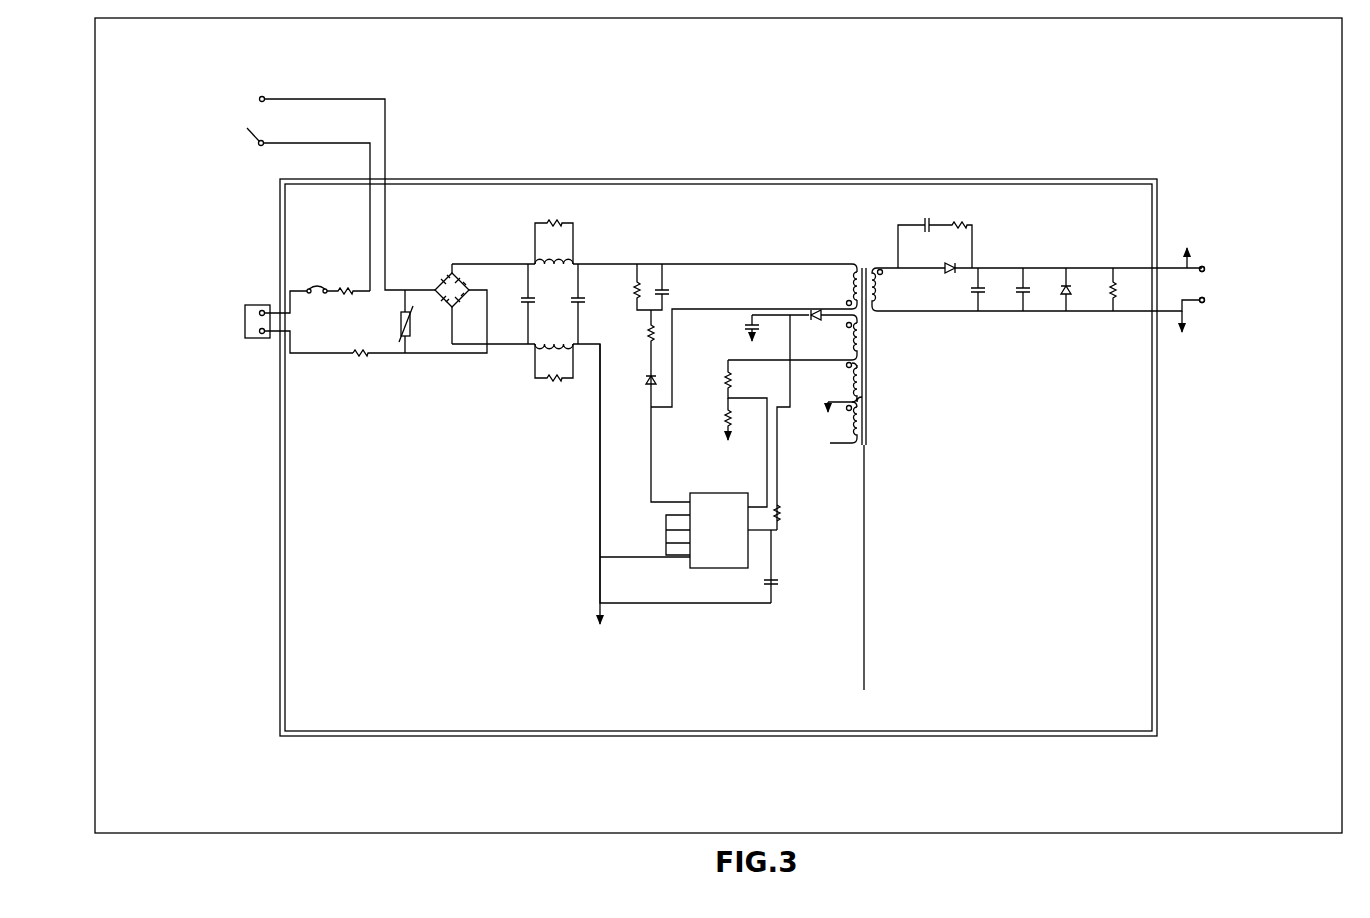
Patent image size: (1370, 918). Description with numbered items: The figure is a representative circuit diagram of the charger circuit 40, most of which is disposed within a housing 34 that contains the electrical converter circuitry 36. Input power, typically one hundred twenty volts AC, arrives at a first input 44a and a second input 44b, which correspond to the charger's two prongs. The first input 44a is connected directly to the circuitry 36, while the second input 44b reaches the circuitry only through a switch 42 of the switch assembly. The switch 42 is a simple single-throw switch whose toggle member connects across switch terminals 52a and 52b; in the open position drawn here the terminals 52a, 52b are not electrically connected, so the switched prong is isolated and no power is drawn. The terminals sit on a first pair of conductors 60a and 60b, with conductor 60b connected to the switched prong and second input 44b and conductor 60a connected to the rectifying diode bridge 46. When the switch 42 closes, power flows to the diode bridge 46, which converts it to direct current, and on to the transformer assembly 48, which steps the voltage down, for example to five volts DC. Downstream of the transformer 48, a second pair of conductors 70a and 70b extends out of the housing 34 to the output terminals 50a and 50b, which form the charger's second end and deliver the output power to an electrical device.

The circuit 40 is at (725, 110).
The housing 34 is at (665, 178).
The transformer assembly 48 is at (858, 222).
The rectifying diode bridge 46 is at (415, 252).
The electrical converter circuitry 36 is at (425, 450).
The switch 42 is at (172, 152).
The switch terminal 52a is at (257, 102).
The switch terminal 52b is at (257, 146).
The conductor 60a is at (385, 137).
The conductor 60b is at (370, 160).
The first input 44a is at (262, 345).
The second input 44b is at (273, 292).
The conductor 70a is at (1176, 321).
The conductor 70b is at (1167, 237).
The output terminal 50a is at (1204, 302).
The output terminal 50b is at (1204, 268).